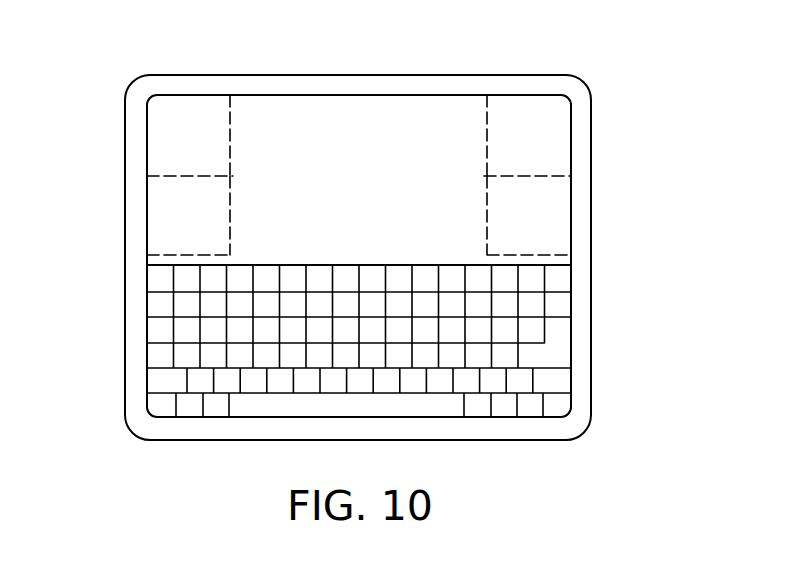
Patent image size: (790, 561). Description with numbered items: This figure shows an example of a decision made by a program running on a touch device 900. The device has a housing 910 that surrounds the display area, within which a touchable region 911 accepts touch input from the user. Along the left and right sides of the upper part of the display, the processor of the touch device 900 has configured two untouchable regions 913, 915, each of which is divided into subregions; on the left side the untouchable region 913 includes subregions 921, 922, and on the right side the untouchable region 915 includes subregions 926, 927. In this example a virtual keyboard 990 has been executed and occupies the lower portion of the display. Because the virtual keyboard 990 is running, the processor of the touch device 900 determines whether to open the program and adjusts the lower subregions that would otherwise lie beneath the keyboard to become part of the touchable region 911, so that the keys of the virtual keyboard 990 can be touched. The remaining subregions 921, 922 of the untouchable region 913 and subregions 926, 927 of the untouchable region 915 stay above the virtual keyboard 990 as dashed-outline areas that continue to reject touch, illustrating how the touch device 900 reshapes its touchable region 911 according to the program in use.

The touch device 900 is at (366, 225).
The housing 910 is at (572, 218).
The touchable region 911 is at (375, 123).
The untouchable region 913 is at (246, 175).
The untouchable region 915 is at (474, 175).
The subregion 921 is at (218, 145).
The subregion 922 is at (218, 226).
The subregion 926 is at (497, 149).
The subregion 927 is at (503, 223).
The virtual keyboard 990 is at (157, 353).